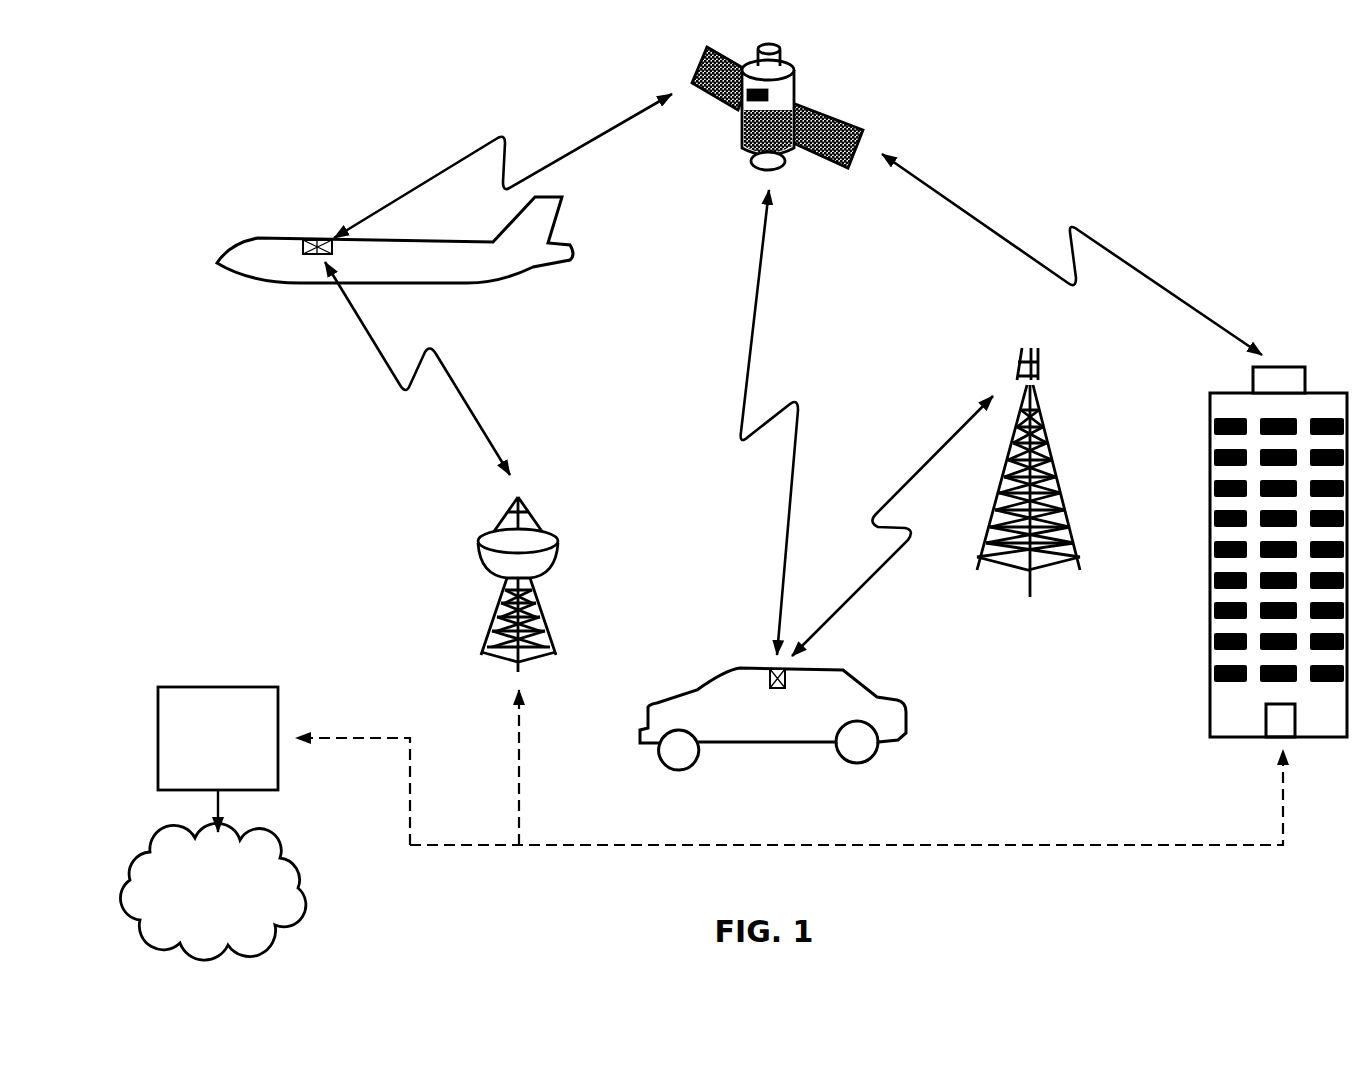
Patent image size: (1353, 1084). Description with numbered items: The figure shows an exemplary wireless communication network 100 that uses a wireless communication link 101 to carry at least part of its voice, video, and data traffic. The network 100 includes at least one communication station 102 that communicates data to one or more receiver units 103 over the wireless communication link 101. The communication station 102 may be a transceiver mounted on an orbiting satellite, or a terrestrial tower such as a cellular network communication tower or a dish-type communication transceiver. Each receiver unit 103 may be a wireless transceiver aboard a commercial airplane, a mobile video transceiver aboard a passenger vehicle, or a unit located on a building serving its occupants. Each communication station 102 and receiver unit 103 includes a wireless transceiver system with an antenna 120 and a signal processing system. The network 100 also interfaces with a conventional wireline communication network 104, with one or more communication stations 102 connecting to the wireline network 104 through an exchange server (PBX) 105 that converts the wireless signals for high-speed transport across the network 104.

The wireless communication network 100 is at (427, 68).
The wireless communication link 101 is at (600, 132).
The communication station 102 is at (798, 80).
The receiver unit 103 is at (285, 238).
The wireline communication network 104 is at (300, 887).
The exchange server (PBX) 105 is at (220, 686).
The antenna 120 is at (311, 238).